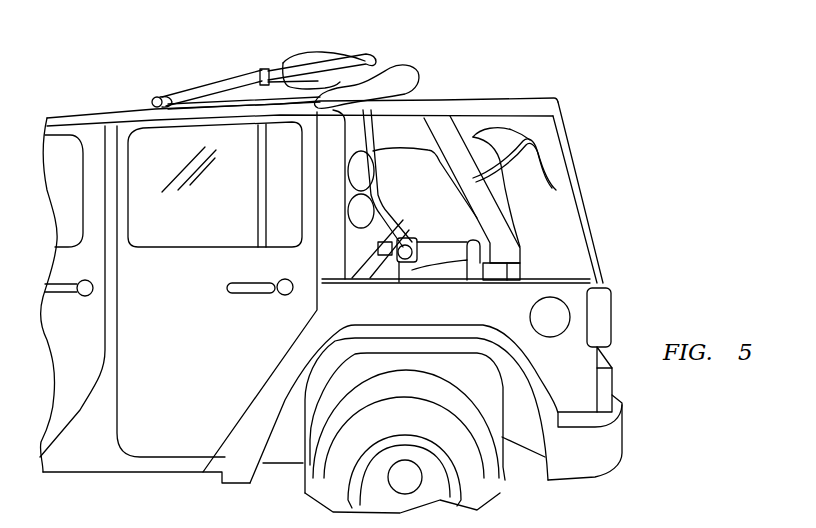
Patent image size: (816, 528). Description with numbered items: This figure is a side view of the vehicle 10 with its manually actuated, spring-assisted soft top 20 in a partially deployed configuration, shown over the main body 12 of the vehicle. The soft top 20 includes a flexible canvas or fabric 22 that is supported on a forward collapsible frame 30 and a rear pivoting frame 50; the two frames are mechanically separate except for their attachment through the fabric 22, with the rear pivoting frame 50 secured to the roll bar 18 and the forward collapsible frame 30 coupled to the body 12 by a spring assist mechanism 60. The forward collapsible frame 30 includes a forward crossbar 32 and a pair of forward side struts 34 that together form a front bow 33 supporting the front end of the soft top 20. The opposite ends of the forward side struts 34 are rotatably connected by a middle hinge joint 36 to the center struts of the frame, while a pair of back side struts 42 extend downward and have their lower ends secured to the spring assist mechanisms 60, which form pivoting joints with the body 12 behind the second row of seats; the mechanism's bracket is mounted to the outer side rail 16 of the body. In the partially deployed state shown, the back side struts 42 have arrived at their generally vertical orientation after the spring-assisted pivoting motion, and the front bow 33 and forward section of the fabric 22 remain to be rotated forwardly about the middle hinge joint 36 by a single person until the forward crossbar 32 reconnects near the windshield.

The vehicle 10 is at (117, 448).
The main body 12 is at (107, 114).
The outer side rail 16 is at (503, 315).
The roll bar 18 is at (482, 201).
The soft top 20 is at (536, 77).
The flexible fabric 22 is at (417, 67).
The forward collapsible frame 30 is at (258, 46).
The forward crossbar 32 is at (372, 62).
The front bow 33 is at (328, 44).
The forward side struts 34 is at (218, 84).
The middle hinge joint 36 is at (156, 97).
The back side struts 42 is at (363, 184).
The rear pivoting frame 50 is at (545, 184).
The spring assist mechanism 60 is at (416, 239).